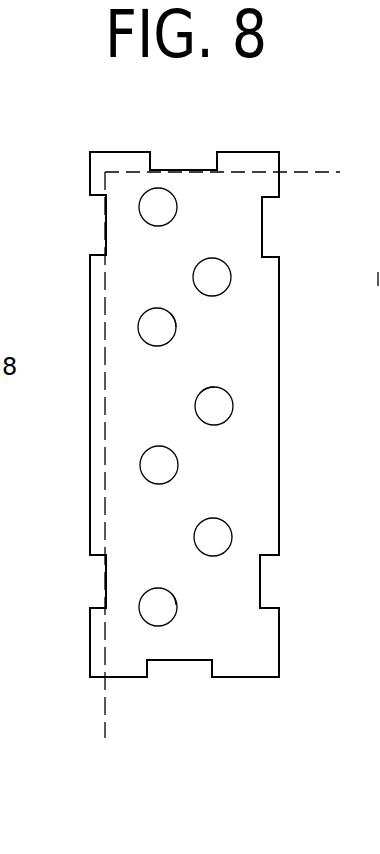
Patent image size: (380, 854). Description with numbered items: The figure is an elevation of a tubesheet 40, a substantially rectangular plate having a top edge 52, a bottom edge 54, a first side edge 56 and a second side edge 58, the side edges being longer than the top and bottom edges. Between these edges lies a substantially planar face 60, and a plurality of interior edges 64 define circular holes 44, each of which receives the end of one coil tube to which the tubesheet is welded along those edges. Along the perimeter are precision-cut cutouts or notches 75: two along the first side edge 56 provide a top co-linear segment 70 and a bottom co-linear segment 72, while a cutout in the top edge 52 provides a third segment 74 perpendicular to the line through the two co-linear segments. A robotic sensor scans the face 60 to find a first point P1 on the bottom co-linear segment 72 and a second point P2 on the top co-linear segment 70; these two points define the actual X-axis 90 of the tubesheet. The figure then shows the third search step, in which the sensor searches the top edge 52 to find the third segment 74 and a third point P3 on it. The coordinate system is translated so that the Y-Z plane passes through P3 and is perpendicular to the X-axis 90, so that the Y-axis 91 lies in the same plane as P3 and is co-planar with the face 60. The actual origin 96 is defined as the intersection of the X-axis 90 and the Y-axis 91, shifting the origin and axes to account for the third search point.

The tubesheet 40 is at (237, 677).
The circular holes 44 is at (157, 213).
The top edge 52 is at (237, 152).
The bottom edge 54 is at (117, 677).
The first side edge 56 is at (90, 438).
The second side edge 58 is at (280, 428).
The planar face 60 is at (250, 484).
The interior edges 64 is at (176, 322).
The top co-linear segment 70 is at (106, 240).
The bottom co-linear segment 72 is at (105, 571).
The third segment 74 is at (168, 168).
The cutout or notch 75 is at (262, 210).
The X-axis 90 is at (104, 730).
The Y-axis 91 is at (305, 170).
The actual origin 96 is at (106, 172).
The first point P1 is at (105, 597).
The second point P2 is at (106, 230).
The third point P3 is at (195, 170).